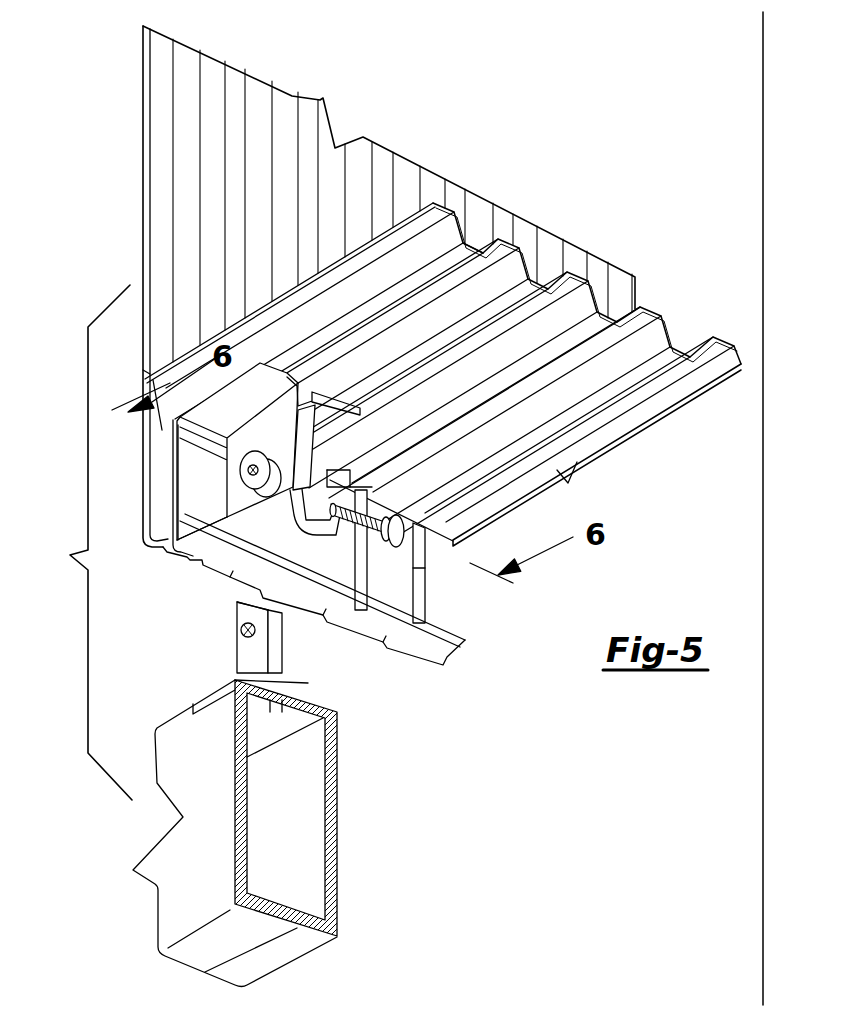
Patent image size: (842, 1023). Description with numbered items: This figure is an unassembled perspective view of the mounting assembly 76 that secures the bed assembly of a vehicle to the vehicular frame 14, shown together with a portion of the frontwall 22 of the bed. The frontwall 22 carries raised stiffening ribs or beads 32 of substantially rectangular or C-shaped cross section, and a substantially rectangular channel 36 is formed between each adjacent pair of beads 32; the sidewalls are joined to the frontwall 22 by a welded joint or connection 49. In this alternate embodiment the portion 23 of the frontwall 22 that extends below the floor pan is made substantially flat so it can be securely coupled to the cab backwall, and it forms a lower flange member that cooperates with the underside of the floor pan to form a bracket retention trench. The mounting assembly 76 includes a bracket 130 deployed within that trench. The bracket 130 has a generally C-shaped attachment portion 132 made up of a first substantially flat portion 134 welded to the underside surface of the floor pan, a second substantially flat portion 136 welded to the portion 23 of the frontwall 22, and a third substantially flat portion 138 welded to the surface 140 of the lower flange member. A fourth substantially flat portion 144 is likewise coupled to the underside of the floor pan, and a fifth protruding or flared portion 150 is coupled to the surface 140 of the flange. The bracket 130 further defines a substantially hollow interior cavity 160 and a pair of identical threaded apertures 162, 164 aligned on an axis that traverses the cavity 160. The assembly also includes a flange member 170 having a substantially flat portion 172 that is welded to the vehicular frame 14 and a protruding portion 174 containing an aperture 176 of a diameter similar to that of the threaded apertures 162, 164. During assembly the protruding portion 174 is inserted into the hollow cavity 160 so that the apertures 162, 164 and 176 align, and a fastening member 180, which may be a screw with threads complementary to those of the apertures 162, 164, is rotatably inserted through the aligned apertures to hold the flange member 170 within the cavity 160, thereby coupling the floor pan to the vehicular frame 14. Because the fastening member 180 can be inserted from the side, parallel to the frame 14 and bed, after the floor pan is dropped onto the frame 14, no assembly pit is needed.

The vehicular frame 14 is at (201, 778).
The frontwall 22 is at (267, 132).
The portion of the frontwall 23 is at (427, 568).
The raised stiffening ribs or beads 32 is at (506, 236).
The channel 36 is at (473, 243).
The welded joint or connection 49 is at (141, 378).
The mounting assembly 76 is at (162, 608).
The bracket 130 is at (320, 465).
The C-shaped attachment portion 132 is at (160, 438).
The first substantially flat portion 134 is at (250, 418).
The second substantially flat portion 136 is at (207, 494).
The third substantially flat portion 138 is at (172, 510).
The surface of the lower flange member 140 is at (447, 650).
The fourth substantially flat portion 144 is at (337, 423).
The fifth protruding or flared portion 150 is at (342, 580).
The hollow interior cavity 160 is at (300, 545).
The threaded aperture 162 is at (253, 468).
The threaded aperture 164 is at (327, 480).
The flange member 170 is at (270, 640).
The substantially flat portion 172 is at (308, 683).
The protruding portion 174 is at (260, 613).
The aperture 176 is at (241, 627).
The fastening member 180 is at (356, 543).